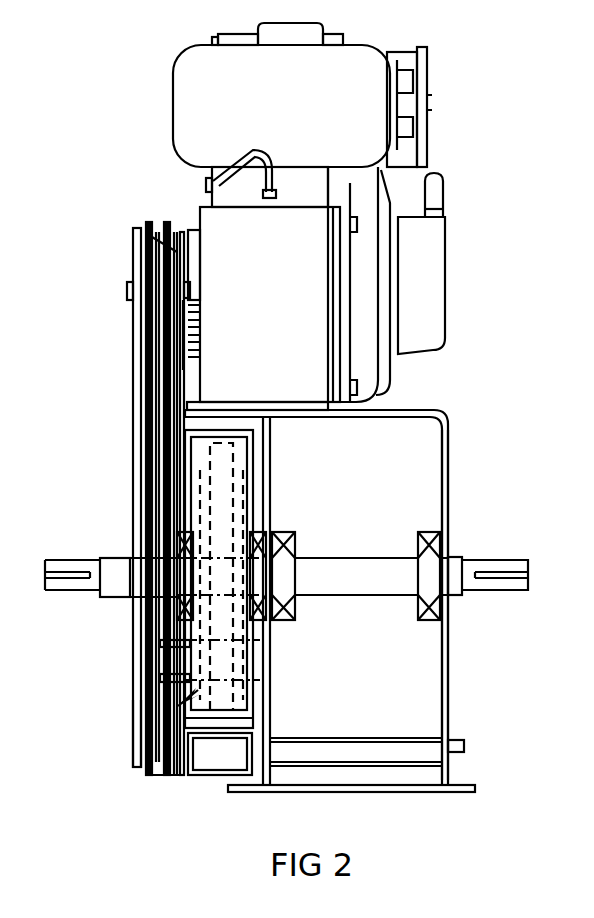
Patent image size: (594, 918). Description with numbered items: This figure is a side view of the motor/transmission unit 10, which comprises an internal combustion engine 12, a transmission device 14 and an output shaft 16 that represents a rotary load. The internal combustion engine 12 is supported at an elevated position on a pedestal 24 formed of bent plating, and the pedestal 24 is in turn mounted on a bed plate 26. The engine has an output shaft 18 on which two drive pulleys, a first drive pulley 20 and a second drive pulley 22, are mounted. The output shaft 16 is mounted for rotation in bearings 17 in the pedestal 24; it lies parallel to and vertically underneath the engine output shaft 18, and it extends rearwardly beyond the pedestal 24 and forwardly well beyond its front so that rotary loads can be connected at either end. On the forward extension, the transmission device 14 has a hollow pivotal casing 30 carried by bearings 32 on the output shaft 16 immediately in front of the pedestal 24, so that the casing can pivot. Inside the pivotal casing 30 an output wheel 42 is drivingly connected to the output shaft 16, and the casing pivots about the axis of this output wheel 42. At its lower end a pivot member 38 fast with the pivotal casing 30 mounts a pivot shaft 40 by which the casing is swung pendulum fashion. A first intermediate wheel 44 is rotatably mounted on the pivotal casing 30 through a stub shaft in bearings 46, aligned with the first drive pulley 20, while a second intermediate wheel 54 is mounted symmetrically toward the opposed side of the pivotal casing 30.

The motor/transmission unit 10 is at (496, 178).
The internal combustion engine 12 is at (462, 271).
The transmission device 14 is at (398, 446).
The output shaft 16 is at (468, 570).
The bearings 17 is at (418, 540).
The output shaft 18 is at (182, 292).
The first drive pulley 20 is at (135, 262).
The second drive pulley 22 is at (149, 226).
The pedestal 24 is at (448, 450).
The bed plate 26 is at (380, 788).
The pivotal casing 30 is at (192, 455).
The bearings 32 is at (178, 545).
The pivot member 38 is at (185, 754).
The pivot shaft 40 is at (352, 746).
The output wheel 42 is at (234, 468).
The first intermediate wheel 44 is at (135, 722).
The bearings 46 is at (170, 695).
The second intermediate wheel 54 is at (170, 746).